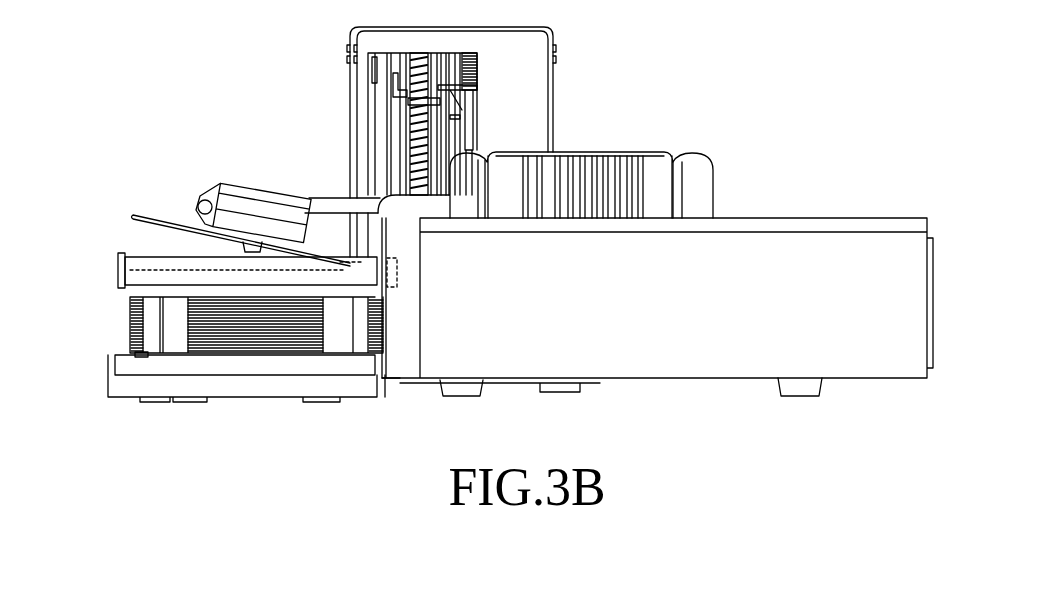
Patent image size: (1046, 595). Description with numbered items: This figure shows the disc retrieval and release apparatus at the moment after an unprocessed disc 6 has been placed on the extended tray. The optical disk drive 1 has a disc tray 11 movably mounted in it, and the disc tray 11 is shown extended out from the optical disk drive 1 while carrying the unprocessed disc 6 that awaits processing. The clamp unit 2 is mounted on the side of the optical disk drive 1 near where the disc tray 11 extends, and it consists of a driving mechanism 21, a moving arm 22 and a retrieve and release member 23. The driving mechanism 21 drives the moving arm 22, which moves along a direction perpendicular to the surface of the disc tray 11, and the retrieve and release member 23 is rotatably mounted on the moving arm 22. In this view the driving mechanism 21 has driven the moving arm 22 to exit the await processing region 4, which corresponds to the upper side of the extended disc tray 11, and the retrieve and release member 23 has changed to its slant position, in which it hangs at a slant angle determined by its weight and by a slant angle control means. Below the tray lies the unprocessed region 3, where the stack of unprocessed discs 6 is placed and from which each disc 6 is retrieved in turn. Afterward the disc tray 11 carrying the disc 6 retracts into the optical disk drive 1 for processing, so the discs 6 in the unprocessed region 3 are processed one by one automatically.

The optical disk drive 1 is at (859, 205).
The clamp unit 2 is at (233, 83).
The driving mechanism 21 is at (412, 120).
The moving arm 22 is at (333, 192).
The retrieve and release member 23 is at (245, 186).
The unprocessed region 3 is at (118, 355).
The await processing region 4 is at (162, 269).
The disc 6 is at (150, 214).
The disc tray 11 is at (118, 270).